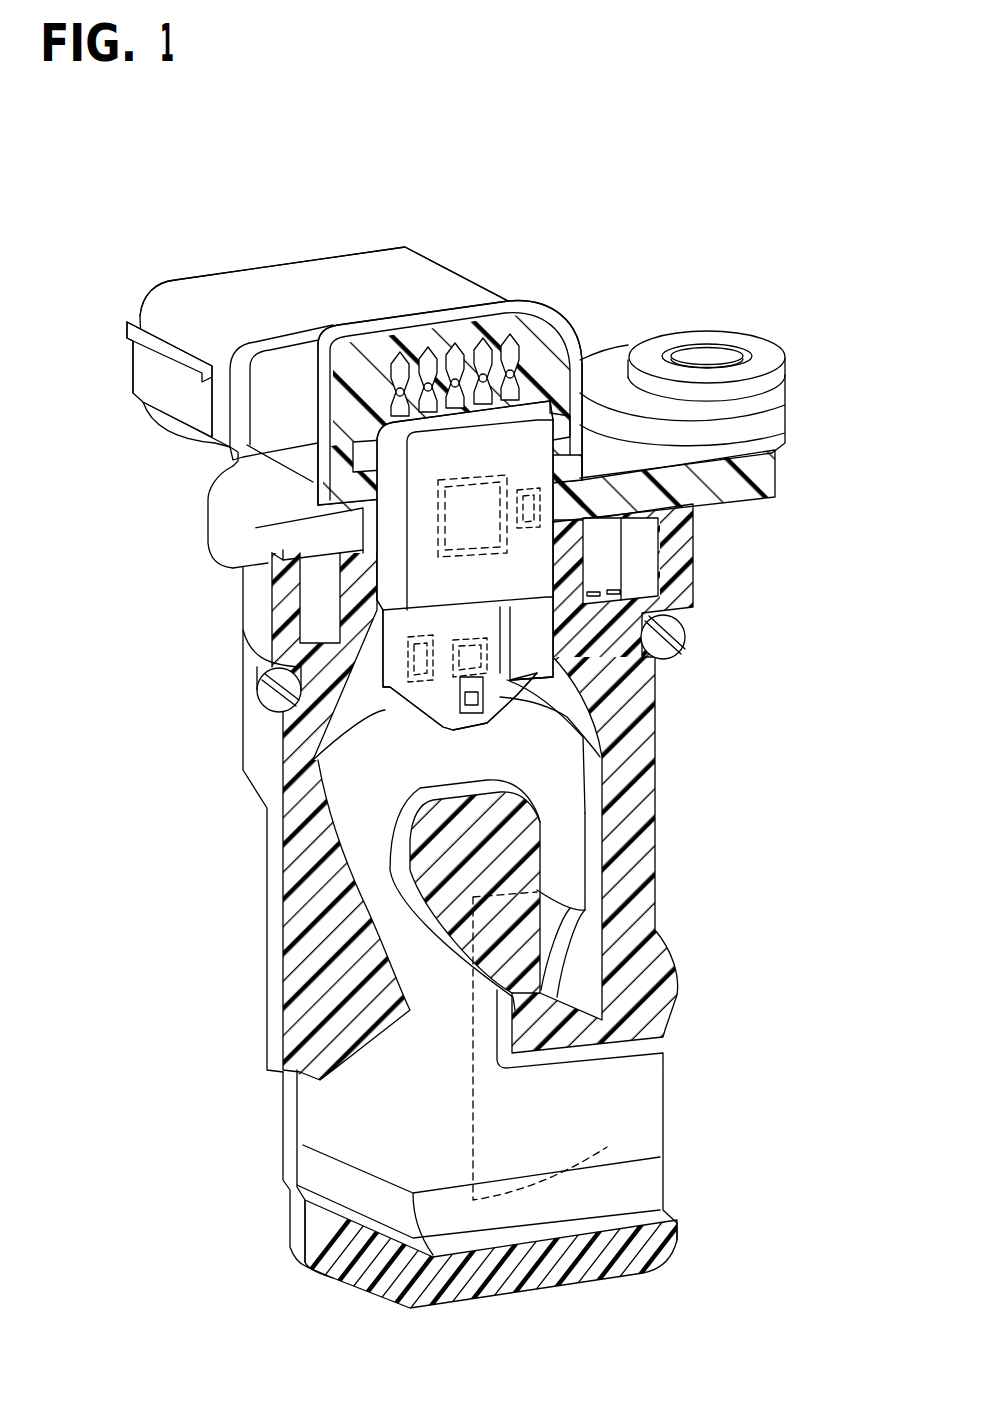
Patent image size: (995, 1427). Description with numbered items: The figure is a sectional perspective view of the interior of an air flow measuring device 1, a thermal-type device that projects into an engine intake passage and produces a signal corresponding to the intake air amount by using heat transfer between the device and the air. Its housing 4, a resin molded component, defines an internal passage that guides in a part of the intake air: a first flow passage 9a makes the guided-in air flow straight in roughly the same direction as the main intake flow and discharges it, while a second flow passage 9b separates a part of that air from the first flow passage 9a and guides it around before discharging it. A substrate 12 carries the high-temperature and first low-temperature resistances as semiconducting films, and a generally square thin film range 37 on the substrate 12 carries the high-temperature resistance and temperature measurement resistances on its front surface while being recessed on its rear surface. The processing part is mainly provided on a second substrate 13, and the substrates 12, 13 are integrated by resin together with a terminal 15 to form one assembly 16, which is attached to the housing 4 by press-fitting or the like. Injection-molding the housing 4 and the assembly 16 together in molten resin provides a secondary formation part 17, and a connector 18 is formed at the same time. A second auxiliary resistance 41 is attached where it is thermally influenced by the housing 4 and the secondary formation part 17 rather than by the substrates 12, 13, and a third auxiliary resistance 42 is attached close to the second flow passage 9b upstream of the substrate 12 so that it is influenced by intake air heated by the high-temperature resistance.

The air flow measuring device 1 is at (486, 759).
The housing 4 is at (260, 900).
The first flow passage 9a is at (628, 1106).
The second flow passage 9b is at (563, 855).
The substrate 12 is at (668, 637).
The substrate 13 is at (483, 533).
The terminal 15 is at (517, 358).
The assembly 16 is at (536, 394).
The secondary formation part 17 is at (215, 572).
The connector 18 is at (293, 300).
The thin film range 37 is at (593, 748).
The second auxiliary resistance 41 is at (540, 508).
The third auxiliary resistance 42 is at (412, 682).